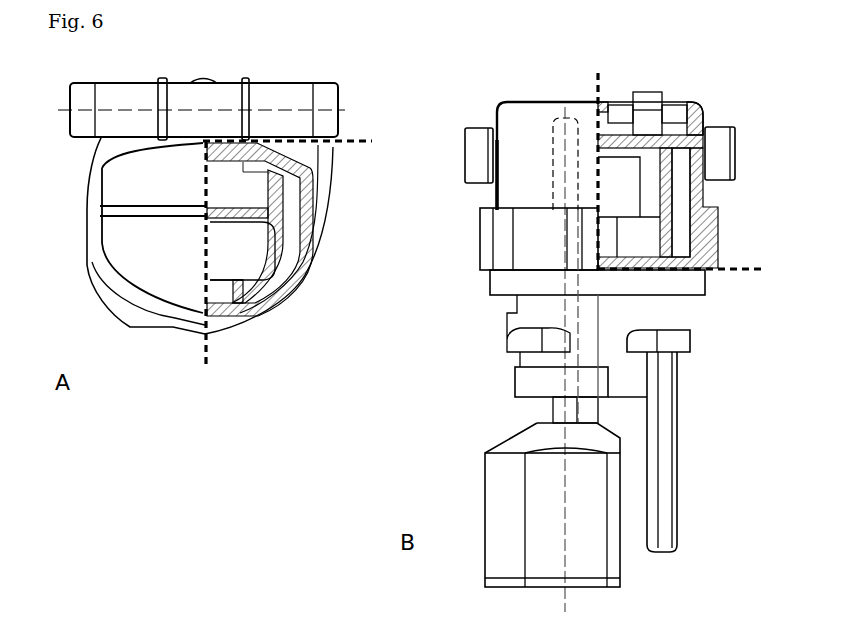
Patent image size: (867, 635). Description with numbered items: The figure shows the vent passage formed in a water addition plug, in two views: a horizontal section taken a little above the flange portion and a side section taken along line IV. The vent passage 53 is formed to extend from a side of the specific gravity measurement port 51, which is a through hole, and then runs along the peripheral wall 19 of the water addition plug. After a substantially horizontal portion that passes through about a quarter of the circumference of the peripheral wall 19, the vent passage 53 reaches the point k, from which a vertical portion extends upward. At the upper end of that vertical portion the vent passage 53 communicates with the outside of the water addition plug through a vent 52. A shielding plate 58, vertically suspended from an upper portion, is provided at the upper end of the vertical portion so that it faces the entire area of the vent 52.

The turning point of the vent passage k is at (287, 181).
The section line IV is at (328, 193).
The peripheral wall 19 is at (308, 213).
The vent passage 53 is at (290, 242).
The specific gravity measurement port 51 is at (240, 257).
The vent 52 is at (697, 150).
The shielding plate 58 is at (678, 172).